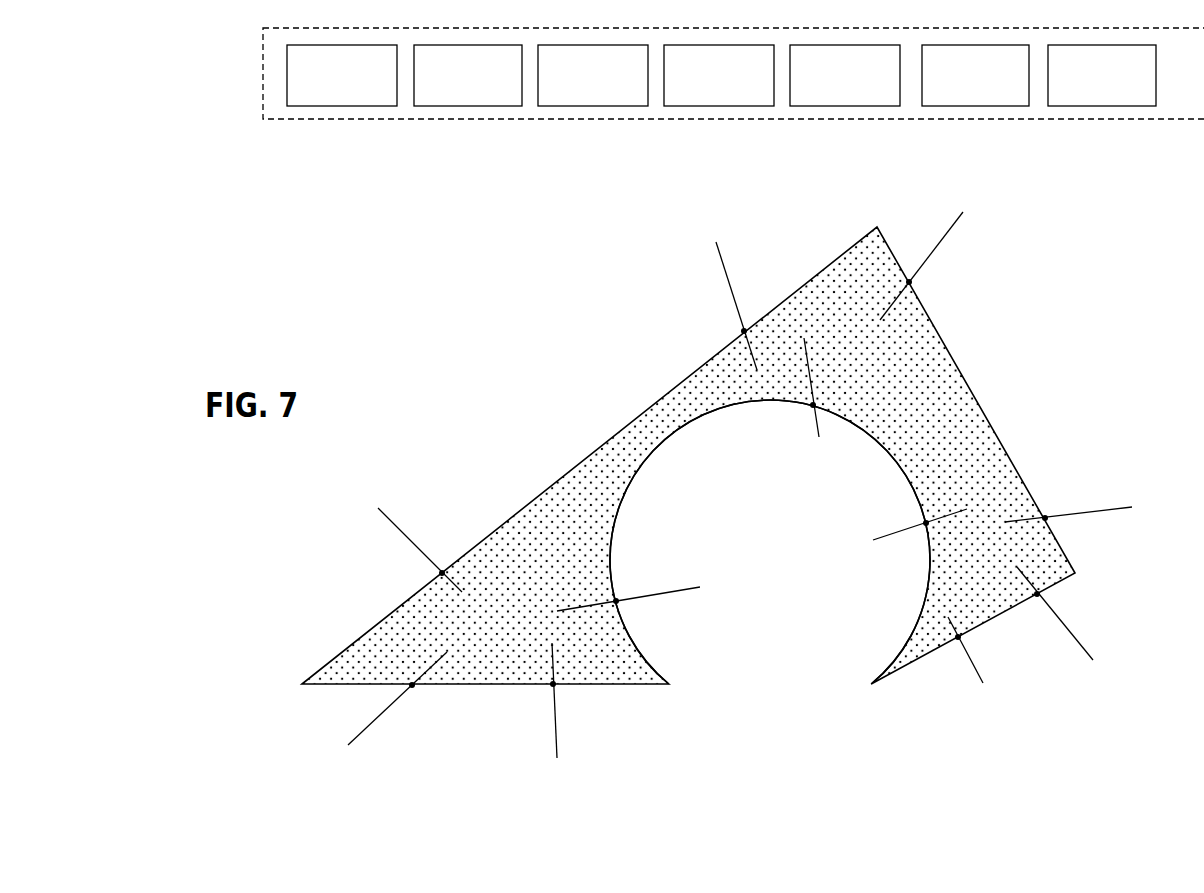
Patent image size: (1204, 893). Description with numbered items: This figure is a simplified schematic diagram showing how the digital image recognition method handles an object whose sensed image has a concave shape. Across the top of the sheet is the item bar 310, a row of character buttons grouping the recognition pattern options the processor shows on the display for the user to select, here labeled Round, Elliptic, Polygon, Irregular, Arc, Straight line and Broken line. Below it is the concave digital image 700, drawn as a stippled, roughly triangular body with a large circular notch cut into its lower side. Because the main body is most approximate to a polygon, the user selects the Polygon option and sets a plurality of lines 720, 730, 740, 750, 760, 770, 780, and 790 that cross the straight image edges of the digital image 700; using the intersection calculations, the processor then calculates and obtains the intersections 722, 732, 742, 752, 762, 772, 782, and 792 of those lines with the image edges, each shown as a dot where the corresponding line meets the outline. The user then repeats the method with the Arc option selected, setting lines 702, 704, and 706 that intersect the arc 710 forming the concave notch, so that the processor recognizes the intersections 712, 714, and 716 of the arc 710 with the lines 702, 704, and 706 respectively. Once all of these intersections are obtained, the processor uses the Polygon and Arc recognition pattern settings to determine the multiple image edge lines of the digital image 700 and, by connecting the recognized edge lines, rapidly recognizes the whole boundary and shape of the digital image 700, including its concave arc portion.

The item bar 310 is at (263, 72).
The concave digital image 700 is at (397, 295).
The line 702 is at (570, 607).
The line 704 is at (890, 541).
The line 706 is at (812, 369).
The arc 710 is at (612, 545).
The intersection 712 is at (616, 601).
The intersection 714 is at (926, 523).
The intersection 716 is at (813, 405).
The line 720 is at (727, 258).
The intersection 722 is at (744, 331).
The line 730 is at (407, 530).
The intersection 732 is at (442, 573).
The line 740 is at (960, 233).
The intersection 742 is at (909, 282).
The line 750 is at (1105, 505).
The intersection 752 is at (1045, 518).
The line 760 is at (357, 738).
The intersection 762 is at (412, 685).
The line 770 is at (559, 725).
The intersection 772 is at (553, 684).
The line 780 is at (981, 672).
The intersection 782 is at (958, 637).
The line 790 is at (1086, 652).
The intersection 792 is at (1037, 594).